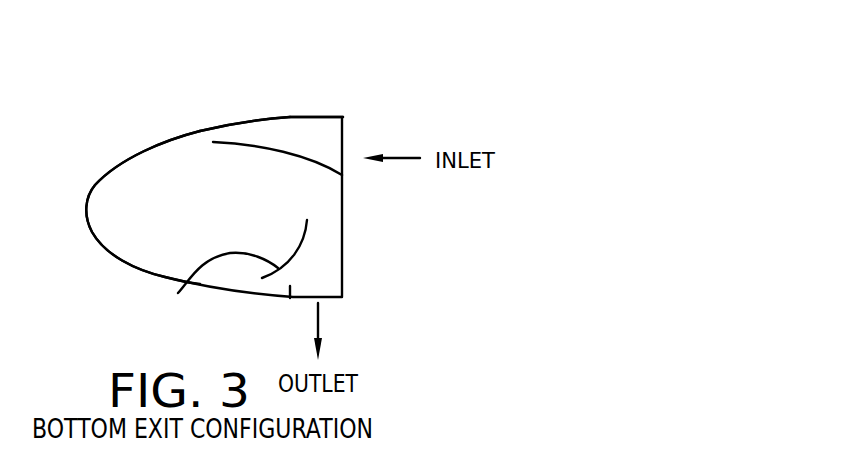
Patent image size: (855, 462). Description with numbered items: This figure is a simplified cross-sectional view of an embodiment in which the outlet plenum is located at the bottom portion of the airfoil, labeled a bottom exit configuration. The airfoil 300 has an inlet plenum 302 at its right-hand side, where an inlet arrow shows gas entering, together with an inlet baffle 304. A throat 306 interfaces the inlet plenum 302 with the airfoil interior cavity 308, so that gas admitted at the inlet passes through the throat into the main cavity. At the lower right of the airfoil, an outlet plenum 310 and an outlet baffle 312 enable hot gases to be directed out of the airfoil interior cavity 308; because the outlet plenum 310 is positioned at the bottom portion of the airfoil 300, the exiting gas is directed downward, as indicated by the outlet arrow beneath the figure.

The airfoil 300 is at (142, 147).
The inlet plenum 302 is at (317, 132).
The inlet baffle 304 is at (313, 155).
The throat 306 is at (222, 132).
The airfoil interior cavity 308 is at (159, 207).
The outlet plenum 310 is at (320, 242).
The outlet baffle 312 is at (178, 293).